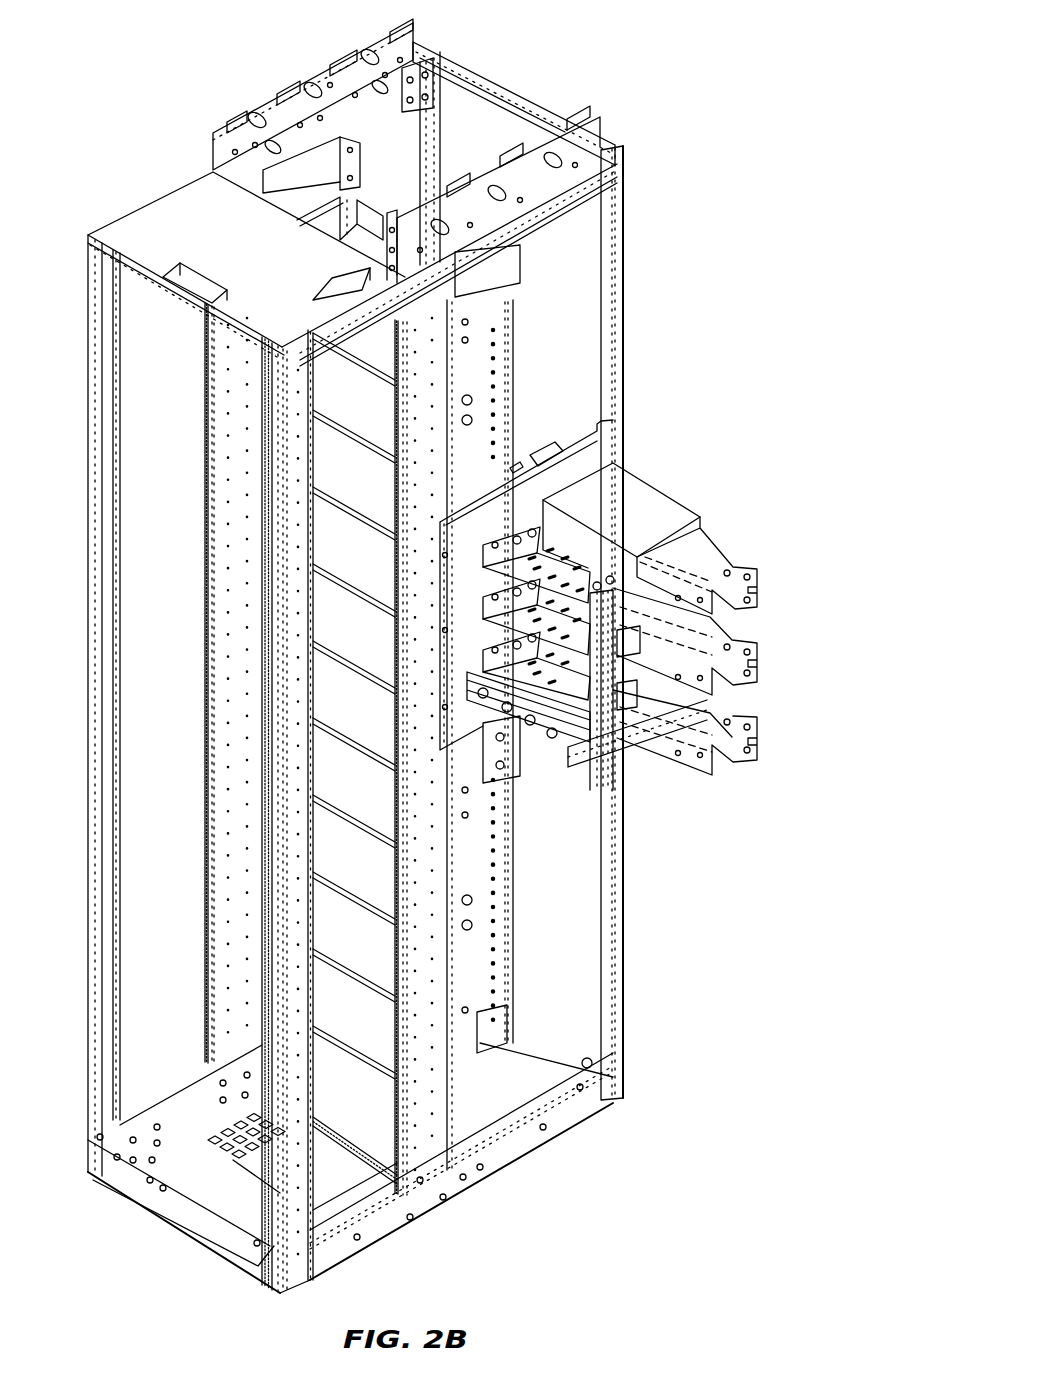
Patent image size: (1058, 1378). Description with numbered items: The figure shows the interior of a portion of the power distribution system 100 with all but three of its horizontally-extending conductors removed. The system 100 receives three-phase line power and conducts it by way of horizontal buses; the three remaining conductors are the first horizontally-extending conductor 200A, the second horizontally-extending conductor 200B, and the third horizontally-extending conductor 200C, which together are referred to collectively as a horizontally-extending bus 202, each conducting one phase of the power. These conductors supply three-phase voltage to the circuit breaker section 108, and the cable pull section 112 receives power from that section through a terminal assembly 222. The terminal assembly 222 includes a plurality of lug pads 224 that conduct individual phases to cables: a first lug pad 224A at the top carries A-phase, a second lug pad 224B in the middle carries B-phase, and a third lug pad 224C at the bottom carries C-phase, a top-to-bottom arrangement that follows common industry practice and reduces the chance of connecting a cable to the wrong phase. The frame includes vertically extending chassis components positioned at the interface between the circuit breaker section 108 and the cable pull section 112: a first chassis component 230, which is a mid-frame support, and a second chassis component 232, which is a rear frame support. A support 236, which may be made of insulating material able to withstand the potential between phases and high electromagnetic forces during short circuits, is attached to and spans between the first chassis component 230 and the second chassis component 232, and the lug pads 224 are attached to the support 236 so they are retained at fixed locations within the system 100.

The power distribution system 100 is at (399, 656).
The circuit breaker section 108 is at (524, 70).
The cable pull section 112 is at (657, 610).
The first horizontally-extending conductor 200A is at (757, 592).
The second horizontally-extending conductor 200B is at (757, 655).
The third horizontally-extending conductor 200C is at (757, 732).
The horizontally-extending bus 202 is at (709, 655).
The terminal assembly 222 is at (700, 484).
The lug pads 224 is at (629, 628).
The first lug pad 224A is at (596, 565).
The second lug pad 224B is at (572, 647).
The third lug pad 224C is at (560, 697).
The first chassis component 230 is at (457, 1135).
The second chassis component 232 is at (623, 216).
The support 236 is at (582, 440).